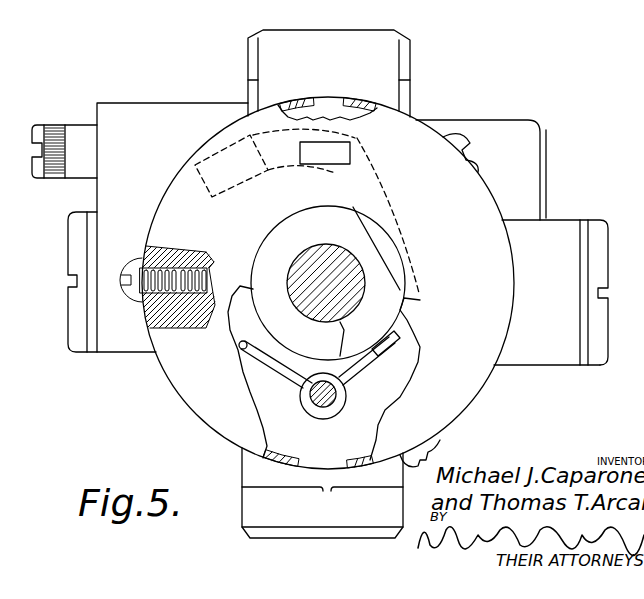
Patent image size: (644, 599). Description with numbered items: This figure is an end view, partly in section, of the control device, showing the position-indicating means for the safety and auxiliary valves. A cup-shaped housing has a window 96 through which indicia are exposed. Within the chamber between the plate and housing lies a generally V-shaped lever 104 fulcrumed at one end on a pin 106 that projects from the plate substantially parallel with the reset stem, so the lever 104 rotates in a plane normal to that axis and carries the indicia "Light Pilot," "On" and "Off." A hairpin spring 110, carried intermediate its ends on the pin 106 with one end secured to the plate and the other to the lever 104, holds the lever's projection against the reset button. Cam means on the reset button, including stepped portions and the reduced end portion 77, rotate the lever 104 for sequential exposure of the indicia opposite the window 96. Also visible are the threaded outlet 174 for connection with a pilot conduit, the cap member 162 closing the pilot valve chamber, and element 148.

The adjusting screw 148 is at (58, 125).
The threaded outlet 174 is at (508, 120).
The cap member 162 is at (598, 210).
The window 96 is at (350, 153).
The lever 104 is at (382, 193).
The pin 106 is at (247, 182).
The reduced end portion 77 is at (333, 244).
The hairpin spring 110 is at (268, 362).